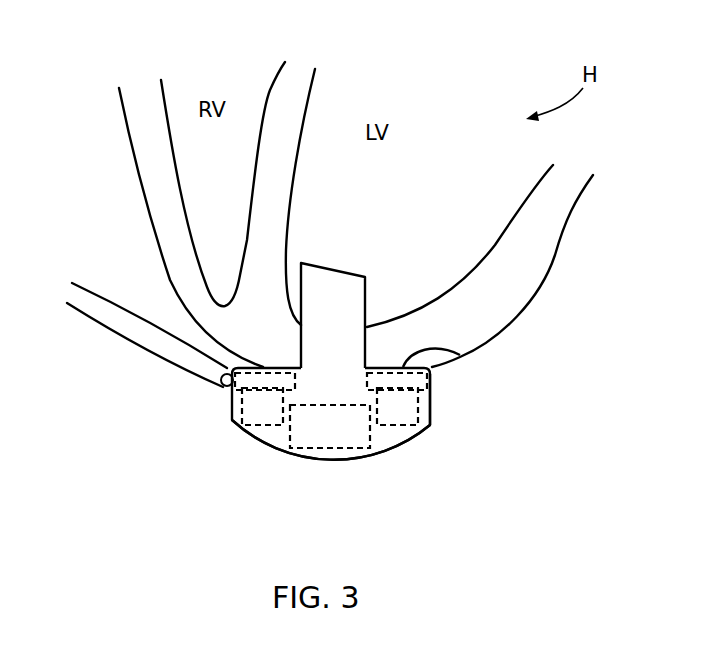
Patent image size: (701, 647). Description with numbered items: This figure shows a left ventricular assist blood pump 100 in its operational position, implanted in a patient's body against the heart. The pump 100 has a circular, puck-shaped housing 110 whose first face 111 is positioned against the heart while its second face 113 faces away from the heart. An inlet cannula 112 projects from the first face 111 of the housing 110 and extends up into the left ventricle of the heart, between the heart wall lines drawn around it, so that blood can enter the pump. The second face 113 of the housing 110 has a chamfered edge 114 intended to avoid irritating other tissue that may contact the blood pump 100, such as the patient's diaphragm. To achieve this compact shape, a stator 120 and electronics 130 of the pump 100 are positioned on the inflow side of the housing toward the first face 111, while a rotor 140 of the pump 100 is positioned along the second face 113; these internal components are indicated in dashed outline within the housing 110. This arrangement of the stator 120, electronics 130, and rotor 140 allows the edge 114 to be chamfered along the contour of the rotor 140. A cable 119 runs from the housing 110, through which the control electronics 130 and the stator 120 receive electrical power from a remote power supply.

The left ventricular assist blood pump 100 is at (312, 382).
The housing 110 is at (262, 444).
The first face 111 is at (460, 355).
The inlet cannula 112 is at (367, 292).
The second face 113 is at (270, 449).
The chamfered edge 114 is at (430, 425).
The cable 119 is at (130, 342).
The stator 120 is at (242, 410).
The electronics 130 is at (222, 384).
The rotor 140 is at (361, 458).